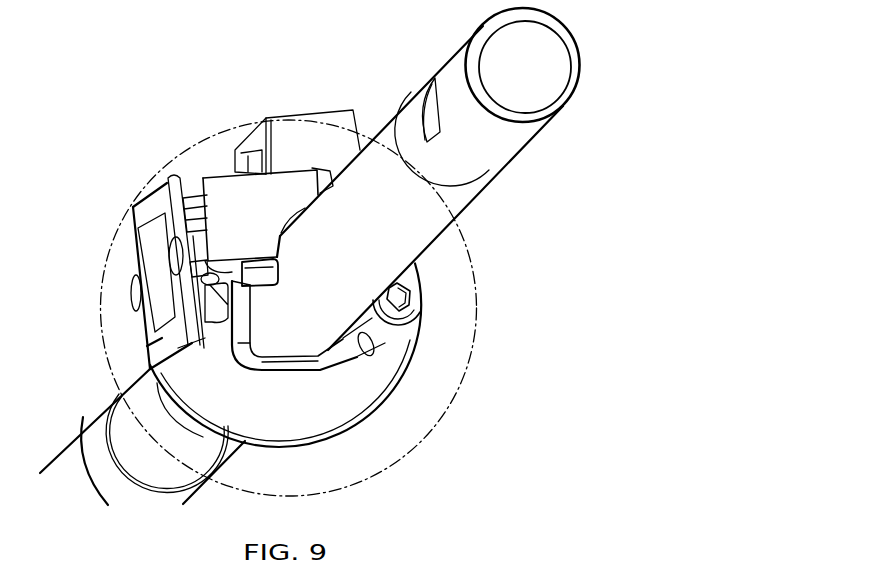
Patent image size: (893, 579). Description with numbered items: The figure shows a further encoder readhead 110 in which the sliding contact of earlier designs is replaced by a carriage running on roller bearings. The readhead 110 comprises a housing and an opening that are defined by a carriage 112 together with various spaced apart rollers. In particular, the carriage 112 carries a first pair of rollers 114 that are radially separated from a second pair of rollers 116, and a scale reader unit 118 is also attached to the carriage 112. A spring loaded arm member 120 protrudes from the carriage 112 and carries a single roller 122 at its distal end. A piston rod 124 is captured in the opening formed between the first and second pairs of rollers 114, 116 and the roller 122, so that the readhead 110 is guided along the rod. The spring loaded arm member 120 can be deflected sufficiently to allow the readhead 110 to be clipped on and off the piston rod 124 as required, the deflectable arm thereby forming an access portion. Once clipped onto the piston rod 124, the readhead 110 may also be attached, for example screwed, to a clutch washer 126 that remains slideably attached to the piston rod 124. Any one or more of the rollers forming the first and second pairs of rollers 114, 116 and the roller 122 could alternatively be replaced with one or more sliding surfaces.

The encoder readhead 110 is at (205, 176).
The carriage 112 is at (268, 218).
The first pair of rollers 114 is at (277, 272).
The second pair of rollers 116 is at (327, 176).
The scale reader unit 118 is at (329, 116).
The spring loaded arm member 120 is at (317, 357).
The roller 122 is at (384, 346).
The piston rod 124 is at (543, 58).
The clutch washer 126 is at (343, 423).